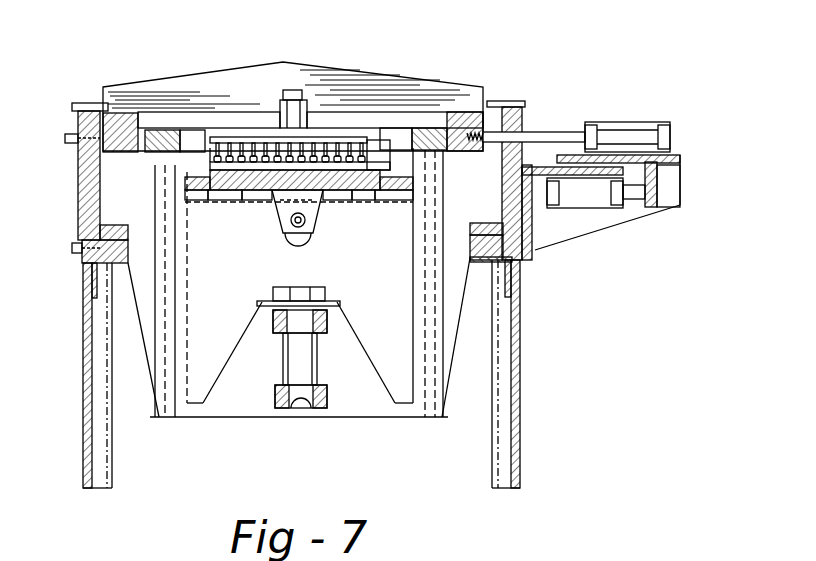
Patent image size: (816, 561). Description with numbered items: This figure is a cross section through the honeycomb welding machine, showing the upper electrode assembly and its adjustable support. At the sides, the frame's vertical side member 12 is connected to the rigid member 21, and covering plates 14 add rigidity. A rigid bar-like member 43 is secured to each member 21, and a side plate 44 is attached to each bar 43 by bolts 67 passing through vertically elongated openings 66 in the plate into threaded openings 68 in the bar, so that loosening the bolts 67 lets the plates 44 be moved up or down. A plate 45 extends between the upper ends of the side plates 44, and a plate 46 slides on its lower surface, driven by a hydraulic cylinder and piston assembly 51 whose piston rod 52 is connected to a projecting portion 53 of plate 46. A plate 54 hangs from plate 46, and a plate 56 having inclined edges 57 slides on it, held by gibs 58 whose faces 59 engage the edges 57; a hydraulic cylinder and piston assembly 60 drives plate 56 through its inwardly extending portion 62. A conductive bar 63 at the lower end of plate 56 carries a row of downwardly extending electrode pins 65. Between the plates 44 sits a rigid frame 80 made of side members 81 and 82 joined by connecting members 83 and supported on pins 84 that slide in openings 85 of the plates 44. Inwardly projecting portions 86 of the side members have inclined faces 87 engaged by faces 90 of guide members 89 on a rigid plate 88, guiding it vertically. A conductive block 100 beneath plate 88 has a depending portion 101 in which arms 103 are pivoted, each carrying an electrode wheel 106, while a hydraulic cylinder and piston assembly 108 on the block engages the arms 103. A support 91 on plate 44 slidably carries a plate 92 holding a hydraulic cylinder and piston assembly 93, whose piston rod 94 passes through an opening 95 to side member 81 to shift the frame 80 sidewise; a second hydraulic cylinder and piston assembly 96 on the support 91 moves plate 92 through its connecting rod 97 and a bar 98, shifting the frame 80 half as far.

The vertical side member 12 is at (112, 440).
The covering plates 14 is at (82, 393).
The rigid member 21 is at (97, 280).
The rigid bar-like member 43 is at (128, 247).
The side plate 44 is at (100, 188).
The plate 45 is at (146, 338).
The plate 46 is at (237, 342).
The hydraulic cylinder and piston assembly 51 is at (317, 353).
The piston rod 52 is at (267, 304).
The projecting portion 53 is at (273, 292).
The plate 54 is at (233, 195).
The plate 56 is at (280, 205).
The edges 57 is at (378, 197).
The gibs 58 is at (410, 195).
The faces 59 is at (213, 191).
The hydraulic cylinder and piston assembly 60 is at (295, 238).
The inwardly extending portion 62 is at (283, 223).
The bar 63 is at (390, 163).
The electrode pins 65 is at (348, 193).
The openings 66 is at (85, 253).
The bolts 67 is at (70, 245).
The threaded openings 68 is at (102, 227).
The rigid frame 80 is at (498, 98).
The side member 81 is at (468, 148).
The side member 82 is at (95, 118).
The rigid connecting members 83 is at (289, 63).
The rigid pins 84 is at (60, 139).
The openings 85 is at (80, 152).
The inwardly projecting portions 86 is at (123, 148).
The faces 87 is at (158, 148).
The rigid plate 88 is at (230, 122).
The guide members 89 is at (396, 139).
The faces 90 is at (423, 148).
The rigid support 91 is at (532, 215).
The plate 92 is at (680, 160).
The hydraulic cylinder and piston assembly 93 is at (635, 123).
The piston rod 94 is at (560, 132).
The opening 95 is at (527, 128).
The hydraulic cylinder and piston assembly 96 is at (583, 210).
The connecting rod 97 is at (635, 203).
The bar 98 is at (657, 183).
The block 100 is at (193, 141).
The depending portion 101 is at (215, 157).
The arms 103 is at (258, 147).
The electrode wheel 106 is at (357, 137).
The hydraulic cylinder and piston assembly 108 is at (292, 92).